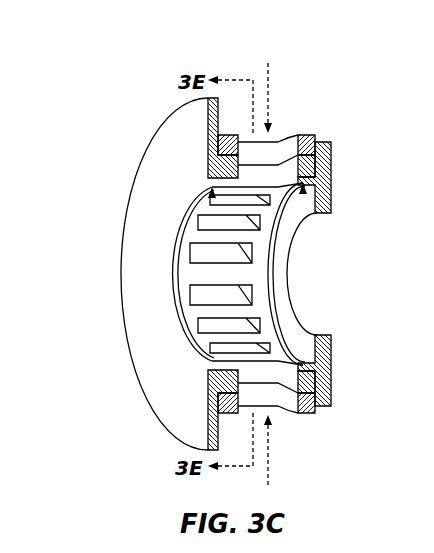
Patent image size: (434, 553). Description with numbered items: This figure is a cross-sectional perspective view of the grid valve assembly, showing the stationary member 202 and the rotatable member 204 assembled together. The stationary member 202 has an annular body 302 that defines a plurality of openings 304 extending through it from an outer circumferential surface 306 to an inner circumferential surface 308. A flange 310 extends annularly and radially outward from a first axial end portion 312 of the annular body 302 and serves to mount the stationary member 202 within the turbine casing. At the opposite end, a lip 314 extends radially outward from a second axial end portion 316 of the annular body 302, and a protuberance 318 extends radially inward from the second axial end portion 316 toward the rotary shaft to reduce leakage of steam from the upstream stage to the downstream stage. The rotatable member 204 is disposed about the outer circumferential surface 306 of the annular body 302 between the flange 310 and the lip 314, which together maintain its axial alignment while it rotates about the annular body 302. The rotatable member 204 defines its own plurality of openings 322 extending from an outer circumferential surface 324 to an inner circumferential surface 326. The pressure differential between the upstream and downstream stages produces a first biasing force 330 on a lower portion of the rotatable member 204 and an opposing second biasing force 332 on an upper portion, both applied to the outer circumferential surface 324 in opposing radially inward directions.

The stationary member 202 is at (106, 306).
The rotatable member 204 is at (307, 123).
The annular body 302 is at (312, 382).
The openings 304 is at (193, 294).
The outer circumferential surface 306 is at (310, 150).
The inner circumferential surface 308 is at (190, 207).
The flange 310 is at (208, 126).
The first axial end portion 312 is at (211, 192).
The lip 314 is at (332, 145).
The second axial end portion 316 is at (308, 218).
The protuberance 318 is at (333, 342).
The openings 322 is at (313, 412).
The outer circumferential surface 324 is at (207, 438).
The inner circumferential surface 326 is at (220, 394).
The first biasing force 330 is at (268, 450).
The second biasing force 332 is at (268, 75).